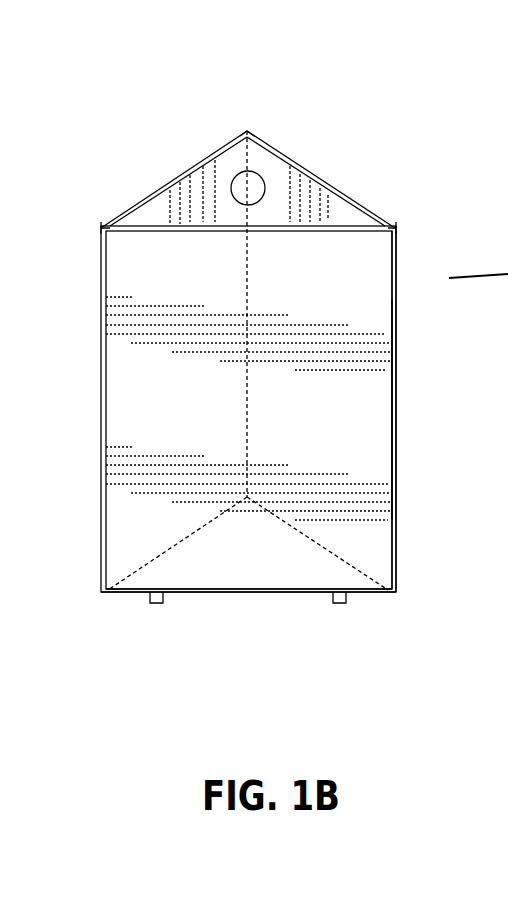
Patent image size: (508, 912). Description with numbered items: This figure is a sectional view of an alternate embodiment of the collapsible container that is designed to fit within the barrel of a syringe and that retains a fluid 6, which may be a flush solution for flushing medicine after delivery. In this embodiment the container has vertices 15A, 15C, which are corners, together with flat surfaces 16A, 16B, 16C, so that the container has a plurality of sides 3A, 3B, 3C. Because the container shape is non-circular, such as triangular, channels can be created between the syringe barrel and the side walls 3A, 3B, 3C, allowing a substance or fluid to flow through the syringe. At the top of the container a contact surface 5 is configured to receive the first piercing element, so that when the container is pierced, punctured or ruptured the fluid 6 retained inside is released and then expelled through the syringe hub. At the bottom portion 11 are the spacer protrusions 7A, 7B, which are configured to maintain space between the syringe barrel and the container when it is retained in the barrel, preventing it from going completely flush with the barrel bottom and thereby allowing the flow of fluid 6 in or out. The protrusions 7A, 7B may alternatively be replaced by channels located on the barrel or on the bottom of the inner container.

The vertex 15A is at (248, 130).
The vertex 15C is at (396, 227).
The contact surface 5 is at (254, 195).
The side wall 3A is at (325, 180).
The flat surface 16A is at (325, 180).
The side wall 3B is at (178, 180).
The flat surface 16B is at (178, 180).
The side wall 3C is at (330, 372).
The flat surface 16C is at (330, 372).
The fluid 6 is at (322, 430).
The protrusion 7A is at (157, 603).
The protrusion 7B is at (340, 603).
The bottom portion 11 is at (233, 593).